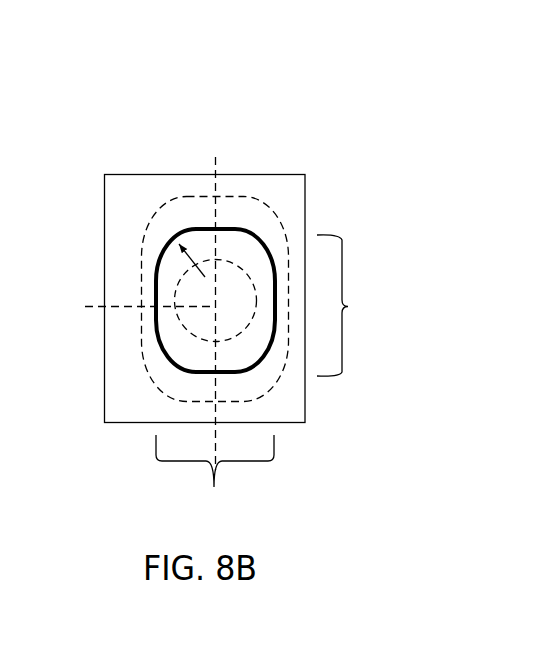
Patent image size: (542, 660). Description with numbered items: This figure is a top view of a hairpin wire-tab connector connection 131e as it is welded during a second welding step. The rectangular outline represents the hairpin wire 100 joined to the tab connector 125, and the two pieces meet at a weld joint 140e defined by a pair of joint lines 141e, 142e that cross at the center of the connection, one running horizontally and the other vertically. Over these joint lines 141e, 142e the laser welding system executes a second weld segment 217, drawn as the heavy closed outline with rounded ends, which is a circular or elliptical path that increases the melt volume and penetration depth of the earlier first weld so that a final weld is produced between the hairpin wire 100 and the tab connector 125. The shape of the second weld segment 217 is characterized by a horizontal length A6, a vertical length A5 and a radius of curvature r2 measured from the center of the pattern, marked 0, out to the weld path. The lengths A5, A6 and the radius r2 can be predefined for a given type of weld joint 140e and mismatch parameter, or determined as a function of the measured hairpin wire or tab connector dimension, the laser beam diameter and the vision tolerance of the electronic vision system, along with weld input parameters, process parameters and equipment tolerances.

The hairpin wire-tab connector connection 131e is at (278, 88).
The tab connector 125 is at (276, 171).
The hairpin wire 100 is at (150, 172).
The weld joint 140e is at (191, 125).
The second weld segment 217 is at (160, 262).
The radius r2 is at (192, 271).
The center point 0 is at (228, 303).
The joint line 142e is at (214, 157).
The joint line 141e is at (95, 306).
The segment length A5 is at (348, 306).
The segment length A6 is at (215, 475).